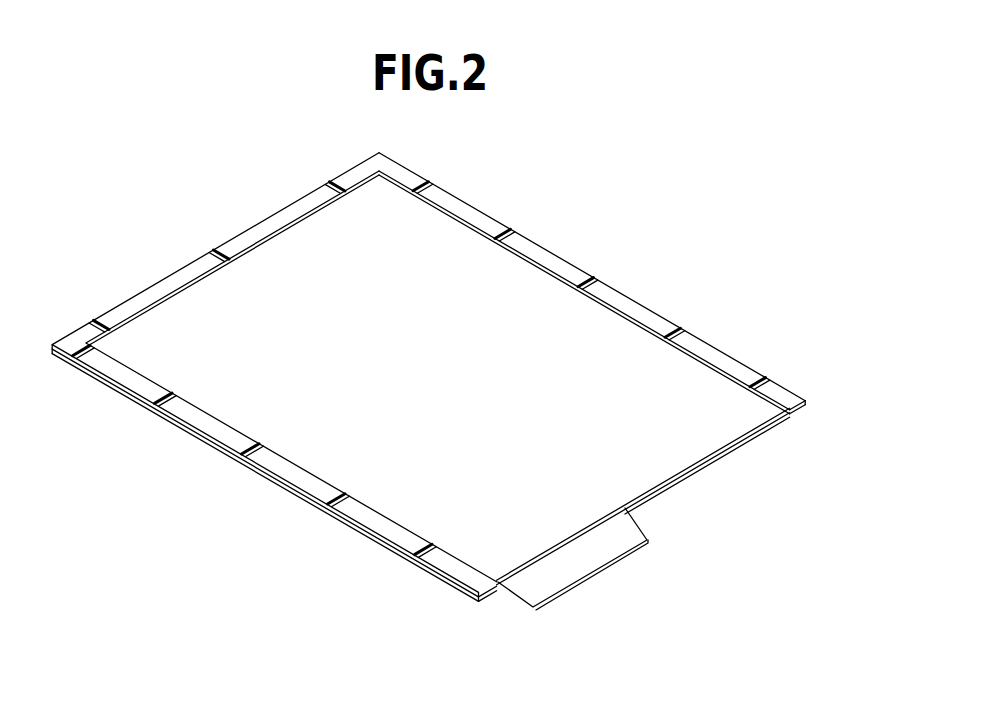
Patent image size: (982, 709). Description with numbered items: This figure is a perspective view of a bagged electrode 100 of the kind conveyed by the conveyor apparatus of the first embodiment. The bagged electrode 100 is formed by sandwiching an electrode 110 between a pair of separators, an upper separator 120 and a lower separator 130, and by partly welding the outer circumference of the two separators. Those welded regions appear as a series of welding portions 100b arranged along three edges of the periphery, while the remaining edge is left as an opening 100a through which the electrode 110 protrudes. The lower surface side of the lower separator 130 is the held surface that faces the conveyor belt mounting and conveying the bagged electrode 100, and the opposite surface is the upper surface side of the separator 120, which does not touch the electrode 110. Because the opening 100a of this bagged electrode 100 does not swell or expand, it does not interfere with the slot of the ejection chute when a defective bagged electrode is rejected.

The bagged electrode 100 is at (128, 146).
The opening 100a is at (662, 487).
The welding portion 100b is at (333, 184).
The electrode 110 is at (528, 586).
The separator 120 is at (790, 402).
The lower separator 130 is at (797, 416).